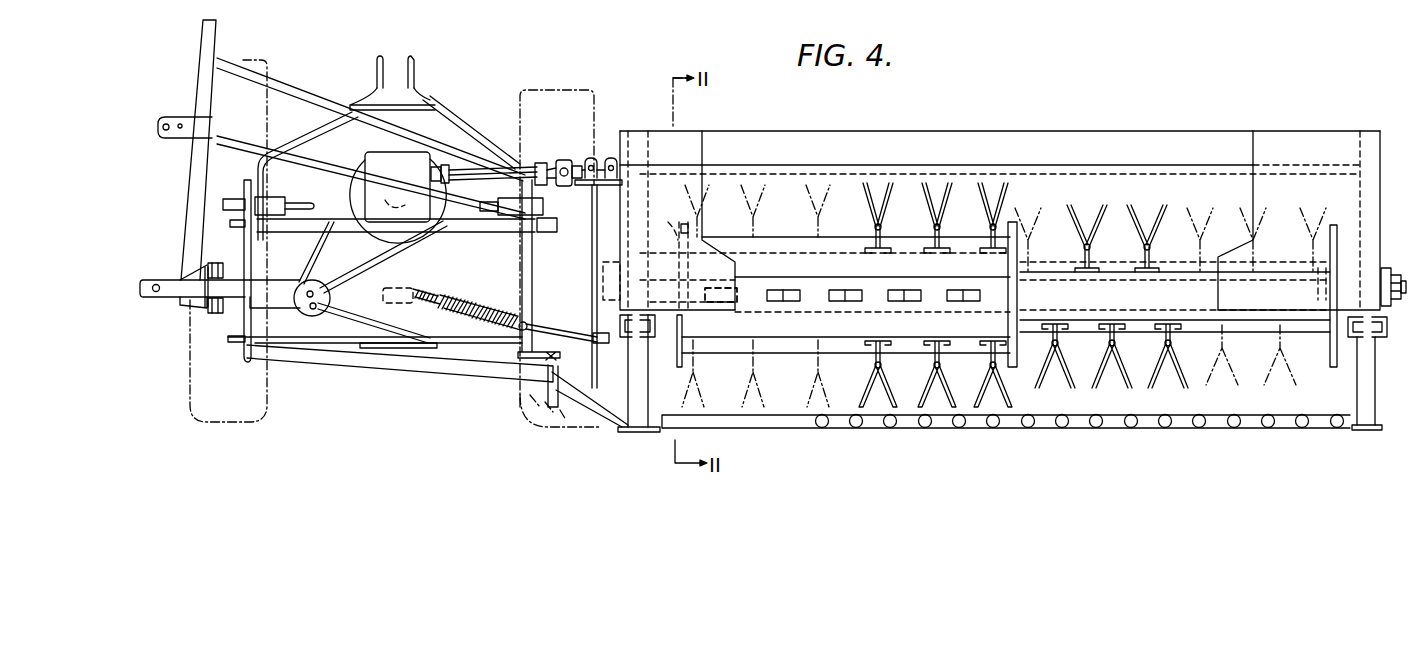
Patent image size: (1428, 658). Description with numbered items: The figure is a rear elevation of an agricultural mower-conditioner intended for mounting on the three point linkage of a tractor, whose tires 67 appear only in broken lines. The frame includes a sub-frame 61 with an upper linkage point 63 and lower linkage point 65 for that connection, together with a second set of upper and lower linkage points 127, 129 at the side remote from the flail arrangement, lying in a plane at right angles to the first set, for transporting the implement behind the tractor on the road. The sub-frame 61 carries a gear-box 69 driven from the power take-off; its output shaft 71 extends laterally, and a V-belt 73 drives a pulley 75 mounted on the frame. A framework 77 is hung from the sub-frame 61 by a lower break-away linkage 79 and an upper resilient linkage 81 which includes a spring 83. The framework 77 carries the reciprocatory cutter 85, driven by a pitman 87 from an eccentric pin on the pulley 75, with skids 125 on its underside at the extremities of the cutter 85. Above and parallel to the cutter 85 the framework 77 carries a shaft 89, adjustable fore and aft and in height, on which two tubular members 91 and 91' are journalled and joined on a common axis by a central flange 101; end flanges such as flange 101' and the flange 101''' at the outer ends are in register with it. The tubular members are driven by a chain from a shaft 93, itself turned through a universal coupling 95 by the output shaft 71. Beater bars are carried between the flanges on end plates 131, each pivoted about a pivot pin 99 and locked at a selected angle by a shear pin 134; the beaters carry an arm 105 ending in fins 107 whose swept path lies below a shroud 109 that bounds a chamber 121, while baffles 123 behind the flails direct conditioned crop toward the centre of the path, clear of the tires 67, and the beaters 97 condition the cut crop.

The sub-frame 61 is at (447, 94).
The upper linkage point 63 is at (412, 72).
The lower linkage point 65 is at (307, 203).
The tractor tires 67 is at (192, 378).
The gear-box 69 is at (428, 158).
The output shaft 71 is at (488, 166).
The V-belt 73 is at (379, 270).
The pulley 75 is at (318, 287).
The framework 77 is at (632, 414).
The break-away linkage 79 is at (605, 410).
The resilient linkage 81 is at (563, 325).
The spring 83 is at (466, 296).
The reciprocatory cutter 85 is at (832, 428).
The pitman 87 is at (348, 318).
The shaft 89 is at (1404, 280).
The tubular member 91 is at (825, 288).
The tubular member 91' is at (1178, 296).
The shaft 93 is at (604, 158).
The universal coupling 95 is at (558, 160).
The tine 97 is at (1015, 208).
The pivot pin 99 is at (694, 246).
The central flange 101 is at (989, 296).
The end flange 101' is at (694, 274).
The tine phantom position end 101''' is at (1324, 243).
The tine pivot 105 is at (932, 231).
The fins 107 is at (786, 301).
The shroud 109 is at (1050, 131).
The chamber 121 is at (684, 132).
The baffles 123 is at (1300, 143).
The skids 125 is at (656, 432).
The upper linkage point 127 is at (170, 117).
The lower linkage point 129 is at (157, 283).
The end plate 131 is at (665, 221).
The shear pin 134 is at (700, 230).